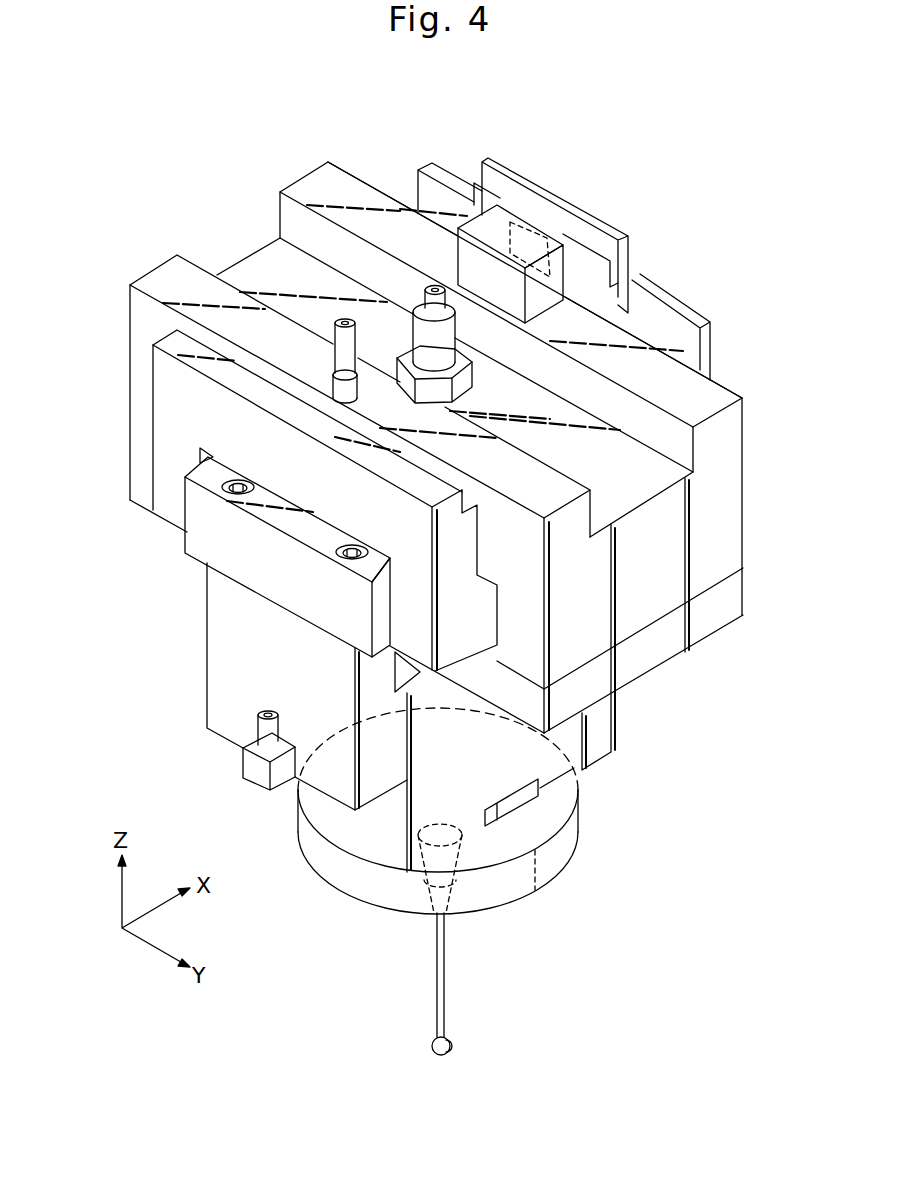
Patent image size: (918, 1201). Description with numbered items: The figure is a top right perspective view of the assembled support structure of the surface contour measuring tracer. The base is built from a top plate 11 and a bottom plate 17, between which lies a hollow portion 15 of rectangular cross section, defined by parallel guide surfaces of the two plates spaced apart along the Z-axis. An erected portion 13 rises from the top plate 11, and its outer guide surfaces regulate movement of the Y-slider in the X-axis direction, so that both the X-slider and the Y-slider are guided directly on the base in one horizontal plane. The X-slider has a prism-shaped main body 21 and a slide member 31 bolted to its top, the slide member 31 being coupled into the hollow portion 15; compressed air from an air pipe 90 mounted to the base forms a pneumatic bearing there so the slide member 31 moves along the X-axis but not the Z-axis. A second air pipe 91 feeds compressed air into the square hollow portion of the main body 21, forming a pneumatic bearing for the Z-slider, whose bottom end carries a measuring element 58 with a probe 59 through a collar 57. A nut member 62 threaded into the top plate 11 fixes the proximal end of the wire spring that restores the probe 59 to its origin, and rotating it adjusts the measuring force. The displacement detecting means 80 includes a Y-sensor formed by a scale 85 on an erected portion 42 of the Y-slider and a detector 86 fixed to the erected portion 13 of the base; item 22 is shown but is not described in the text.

The top plate 11 is at (713, 562).
The erected portion 13 is at (150, 281).
The hollow portion 15 is at (200, 460).
The bottom plate 17 is at (718, 622).
The main body 21 is at (207, 642).
The rib 22 is at (403, 675).
The slide member 31 is at (188, 549).
The erected portion 42 is at (692, 320).
The collar 57 is at (578, 850).
The measuring element 58 is at (448, 967).
The probe 59 is at (452, 1042).
The nut member 62 is at (413, 326).
The displacement detecting means 80 is at (622, 176).
The scale 85 is at (570, 238).
The detector 86 is at (533, 236).
The air pipe 90 is at (335, 350).
The air pipe 91 is at (262, 730).